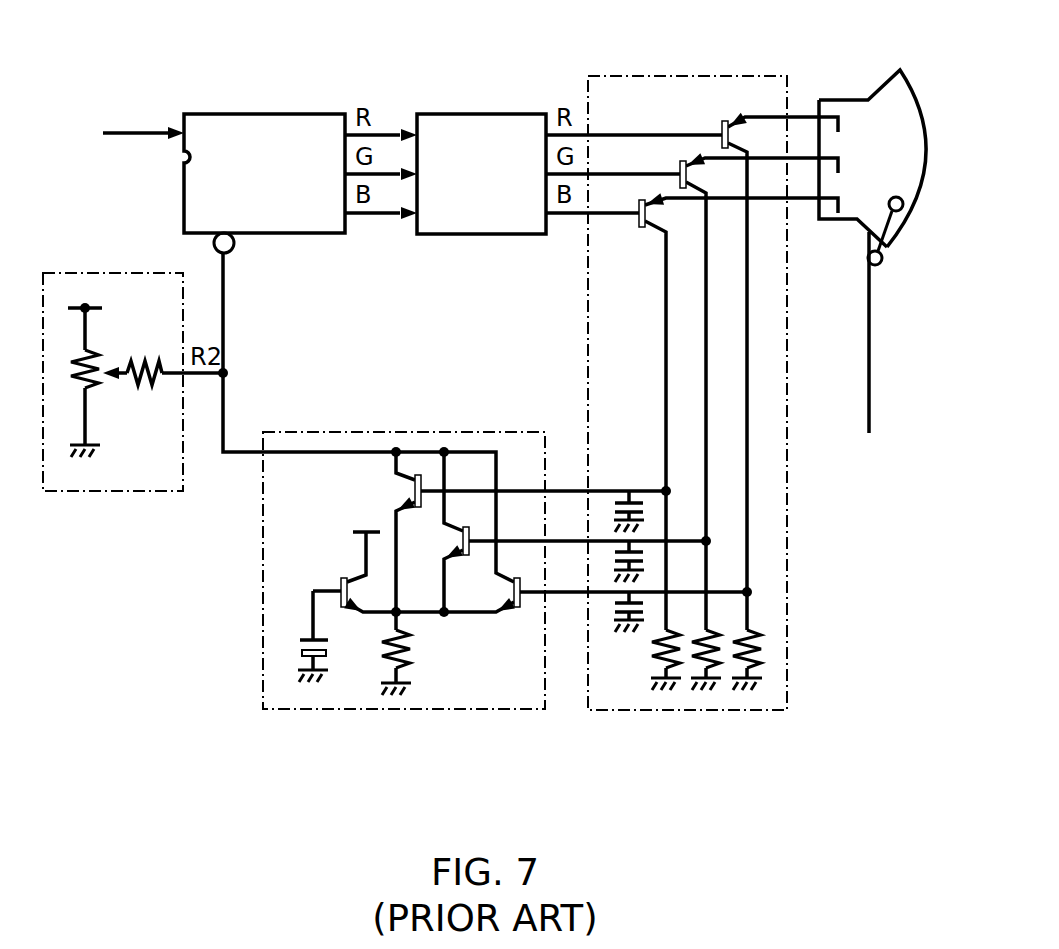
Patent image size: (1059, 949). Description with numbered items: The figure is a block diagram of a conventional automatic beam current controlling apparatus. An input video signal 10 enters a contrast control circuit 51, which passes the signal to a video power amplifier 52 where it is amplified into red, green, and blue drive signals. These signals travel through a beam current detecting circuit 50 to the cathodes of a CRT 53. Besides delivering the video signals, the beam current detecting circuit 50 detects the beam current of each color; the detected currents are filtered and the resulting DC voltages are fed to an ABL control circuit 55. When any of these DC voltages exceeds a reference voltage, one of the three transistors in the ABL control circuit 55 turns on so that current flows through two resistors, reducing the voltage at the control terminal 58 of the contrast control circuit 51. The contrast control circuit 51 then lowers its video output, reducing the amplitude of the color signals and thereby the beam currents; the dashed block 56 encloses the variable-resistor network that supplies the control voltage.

The input video signal 10 is at (135, 130).
The contrast control circuit 51 is at (268, 112).
The video power amplifier 52 is at (478, 112).
The beam current detecting circuit 50 is at (677, 76).
The CRT 53 is at (848, 100).
The control terminal 58 is at (235, 248).
The ABL control circuit 55 is at (395, 432).
The contrast adjusting variable resistor circuit 56 is at (110, 491).